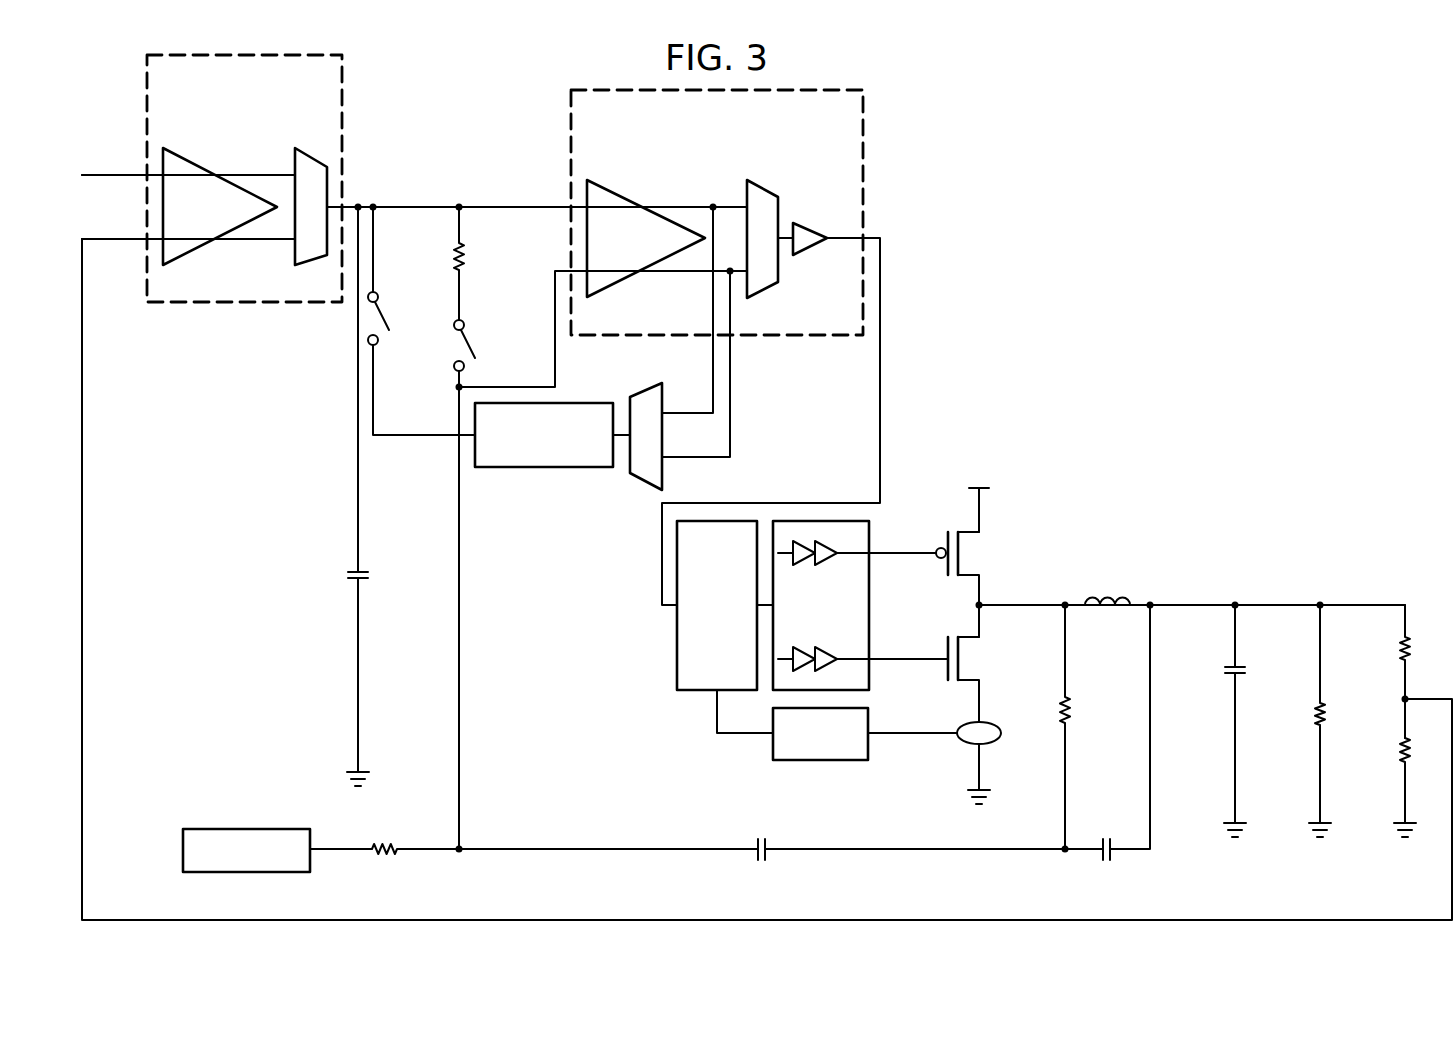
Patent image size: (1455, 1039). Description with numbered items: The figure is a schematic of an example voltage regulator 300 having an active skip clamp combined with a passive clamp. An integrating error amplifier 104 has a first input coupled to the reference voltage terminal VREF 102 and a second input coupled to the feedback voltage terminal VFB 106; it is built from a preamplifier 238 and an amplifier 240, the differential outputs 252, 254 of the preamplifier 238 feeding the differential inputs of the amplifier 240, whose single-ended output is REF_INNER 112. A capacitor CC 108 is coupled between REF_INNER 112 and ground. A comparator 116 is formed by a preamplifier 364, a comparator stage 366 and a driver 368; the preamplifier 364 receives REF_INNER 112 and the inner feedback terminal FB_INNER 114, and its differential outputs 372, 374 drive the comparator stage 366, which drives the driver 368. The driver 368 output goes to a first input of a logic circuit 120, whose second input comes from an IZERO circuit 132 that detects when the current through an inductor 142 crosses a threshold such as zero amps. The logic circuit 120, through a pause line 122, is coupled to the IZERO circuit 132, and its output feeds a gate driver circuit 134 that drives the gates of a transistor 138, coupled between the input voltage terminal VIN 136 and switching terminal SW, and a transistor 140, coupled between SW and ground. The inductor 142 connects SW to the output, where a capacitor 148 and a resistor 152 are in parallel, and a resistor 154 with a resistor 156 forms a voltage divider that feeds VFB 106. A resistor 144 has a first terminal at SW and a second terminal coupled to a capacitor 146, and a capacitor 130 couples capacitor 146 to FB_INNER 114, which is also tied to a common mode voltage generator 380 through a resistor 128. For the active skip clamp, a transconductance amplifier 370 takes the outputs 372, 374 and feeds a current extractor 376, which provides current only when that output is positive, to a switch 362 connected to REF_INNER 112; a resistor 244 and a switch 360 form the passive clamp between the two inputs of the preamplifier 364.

The voltage regulator 300 is at (1108, 244).
The reference voltage terminal VREF 102 is at (125, 174).
The integrating error amplifier 104 is at (206, 302).
The feedback voltage terminal VFB 106 is at (124, 242).
The capacitor CC 108 is at (346, 575).
The REF_INNER output 112 is at (392, 204).
The inner feedback terminal FB_INNER 114 is at (611, 852).
The comparator 116 is at (570, 151).
The logic circuit 120 is at (737, 637).
The pause signal line 122 is at (746, 737).
The resistor 128 is at (384, 858).
The capacitor 130 is at (762, 862).
The IZERO circuit 132 is at (820, 762).
The gate driver circuit 134 is at (872, 614).
The input voltage terminal VIN 136 is at (992, 489).
The transistor 138 is at (944, 570).
The transistor 140 is at (944, 673).
The inductor 142 is at (1107, 613).
The resistor 144 is at (1057, 714).
The capacitor 146 is at (1110, 862).
The capacitor 148 is at (1223, 670).
The resistor 152 is at (1314, 711).
The resistor 154 is at (1398, 652).
The feedback resistor R2 156 is at (1398, 752).
The preamplifier 238 is at (225, 220).
The amplifier 240 is at (305, 150).
The resistor 244 is at (453, 262).
The differential output 252 is at (254, 174).
The differential output 254 is at (258, 240).
The switch 360 is at (468, 350).
The switch 362 is at (384, 320).
The preamplifier 364 is at (647, 251).
The comparator stage 366 is at (764, 183).
The driver 368 is at (808, 227).
The transconductance amplifier 370 is at (636, 474).
The differential output 372 is at (702, 204).
The differential output 374 is at (689, 274).
The current extractor 376 is at (543, 470).
The common mode voltage generator 380 is at (182, 860).